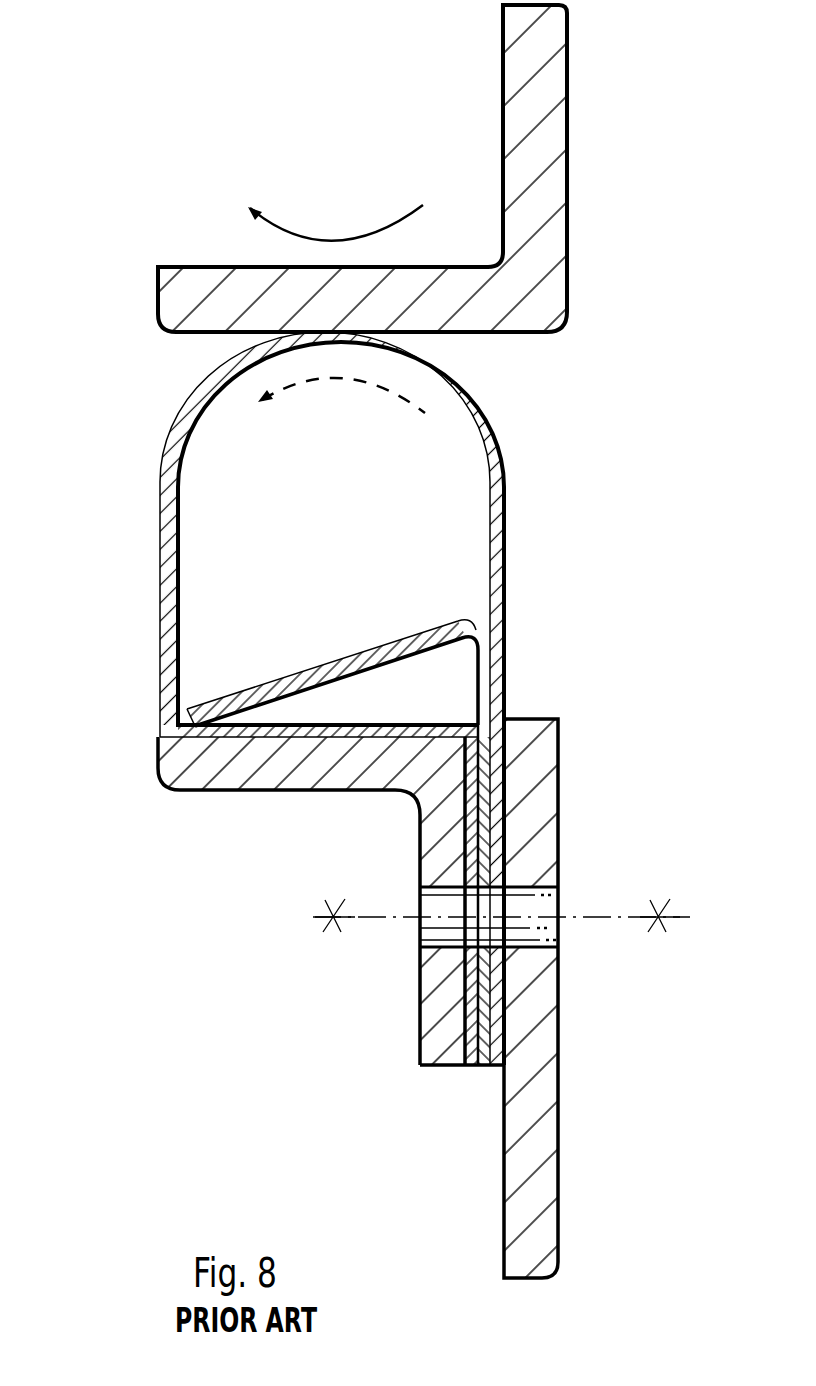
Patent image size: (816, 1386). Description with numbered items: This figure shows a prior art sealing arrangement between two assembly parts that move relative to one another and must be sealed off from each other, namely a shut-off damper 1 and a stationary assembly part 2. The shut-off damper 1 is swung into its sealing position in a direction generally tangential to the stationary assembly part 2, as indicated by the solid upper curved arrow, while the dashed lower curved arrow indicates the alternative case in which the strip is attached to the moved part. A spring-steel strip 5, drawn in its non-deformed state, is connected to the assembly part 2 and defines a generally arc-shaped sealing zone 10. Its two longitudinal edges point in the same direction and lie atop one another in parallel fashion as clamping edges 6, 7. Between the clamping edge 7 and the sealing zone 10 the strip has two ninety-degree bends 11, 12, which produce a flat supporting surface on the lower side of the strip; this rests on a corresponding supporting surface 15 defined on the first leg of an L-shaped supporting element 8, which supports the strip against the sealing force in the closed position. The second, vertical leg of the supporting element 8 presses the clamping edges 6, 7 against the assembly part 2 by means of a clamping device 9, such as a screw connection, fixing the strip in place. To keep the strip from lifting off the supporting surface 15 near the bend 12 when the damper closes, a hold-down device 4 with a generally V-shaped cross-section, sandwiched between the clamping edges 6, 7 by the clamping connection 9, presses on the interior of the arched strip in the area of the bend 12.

The shut-off damper 1 is at (546, 141).
The stationary assembly part 2 is at (542, 1188).
The hold-down device 4 is at (421, 623).
The spring-steel strip 5 is at (512, 430).
The clamping edge 6 is at (493, 824).
The clamping edge 7 is at (455, 835).
The supporting element 8 is at (290, 775).
The clamping device 9 is at (628, 920).
The sealing zone 10 is at (190, 422).
The bend 11 is at (470, 718).
The bend 12 is at (160, 742).
The supporting surface 15 is at (250, 748).